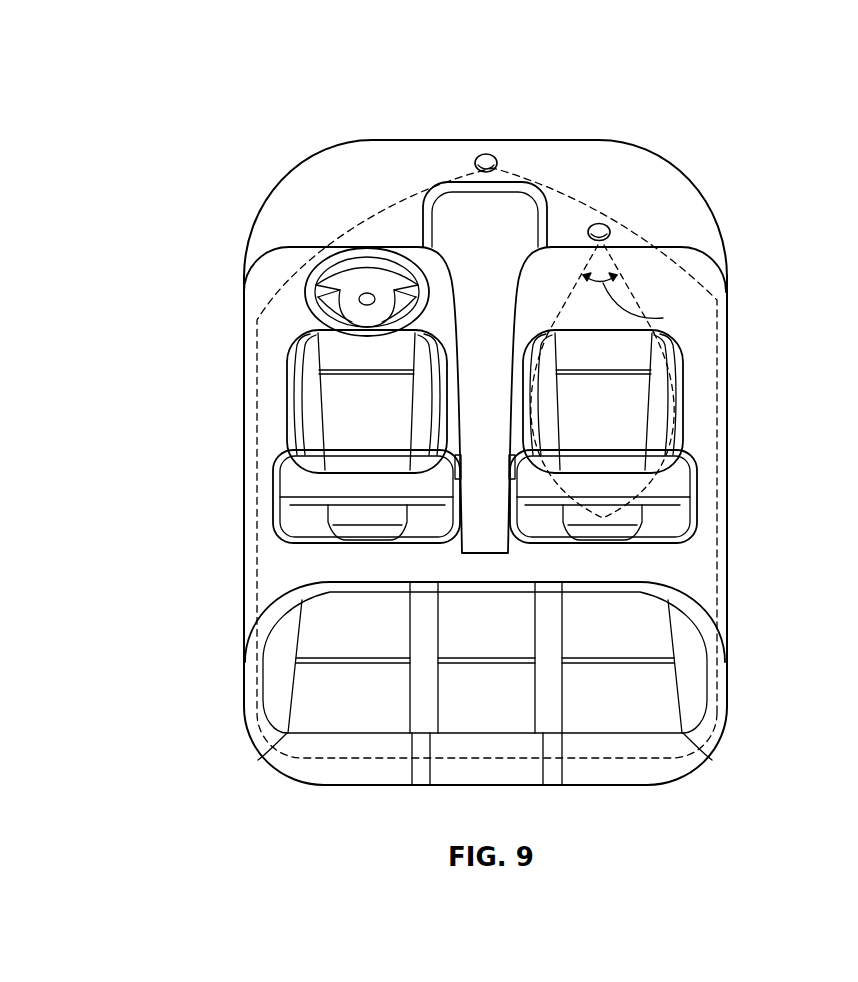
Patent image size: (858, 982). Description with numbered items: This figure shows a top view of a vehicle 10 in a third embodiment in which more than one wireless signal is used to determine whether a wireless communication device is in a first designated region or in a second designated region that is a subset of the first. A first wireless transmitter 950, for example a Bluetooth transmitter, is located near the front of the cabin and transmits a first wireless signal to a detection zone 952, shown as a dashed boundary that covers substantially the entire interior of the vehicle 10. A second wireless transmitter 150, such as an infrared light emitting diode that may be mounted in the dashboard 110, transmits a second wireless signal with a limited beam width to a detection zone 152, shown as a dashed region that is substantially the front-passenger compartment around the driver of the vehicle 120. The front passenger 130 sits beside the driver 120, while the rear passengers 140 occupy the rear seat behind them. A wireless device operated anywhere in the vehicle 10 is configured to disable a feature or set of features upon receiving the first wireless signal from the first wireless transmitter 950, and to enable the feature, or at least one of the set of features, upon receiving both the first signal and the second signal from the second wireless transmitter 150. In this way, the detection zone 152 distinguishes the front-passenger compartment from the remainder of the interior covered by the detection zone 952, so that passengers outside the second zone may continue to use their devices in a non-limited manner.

The vehicle 10 is at (779, 121).
The dashboard 110 is at (597, 173).
The driver of the vehicle 120 is at (283, 376).
The front passenger 130 is at (683, 373).
The rear passengers 140 is at (285, 598).
The second wireless transmitter 150 is at (608, 223).
The detection zone 152 is at (632, 287).
The first wireless transmitter 950 is at (484, 152).
The detection zone 952 is at (330, 237).